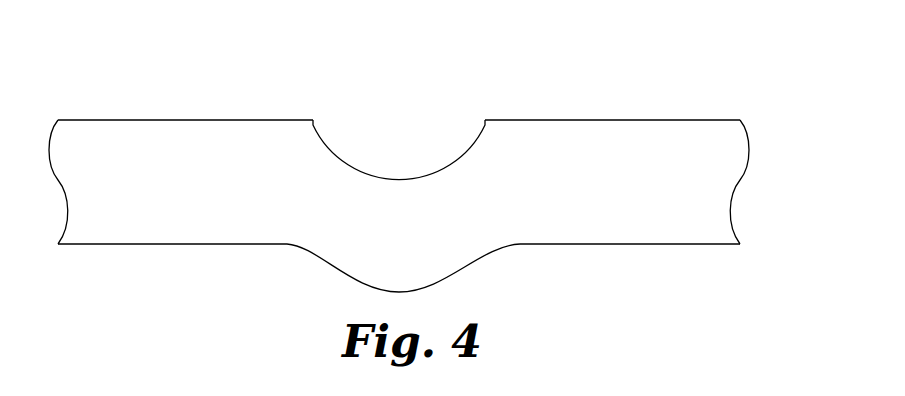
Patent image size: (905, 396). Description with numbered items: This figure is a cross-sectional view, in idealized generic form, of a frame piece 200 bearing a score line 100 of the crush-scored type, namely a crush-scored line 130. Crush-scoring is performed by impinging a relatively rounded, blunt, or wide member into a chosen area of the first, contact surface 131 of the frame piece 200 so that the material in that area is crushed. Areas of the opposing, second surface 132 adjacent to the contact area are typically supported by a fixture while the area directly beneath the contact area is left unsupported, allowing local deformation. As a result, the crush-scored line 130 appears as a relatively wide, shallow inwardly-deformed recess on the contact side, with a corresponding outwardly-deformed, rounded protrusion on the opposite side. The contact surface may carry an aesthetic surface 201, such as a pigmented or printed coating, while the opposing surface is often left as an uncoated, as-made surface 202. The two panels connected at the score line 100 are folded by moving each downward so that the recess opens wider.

The score line 100 is at (395, 105).
The frame piece 200 is at (90, 137).
The crush-scored line 130 is at (442, 90).
The first, contact surface 131 is at (212, 103).
The opposing, second surface 132 is at (155, 263).
The aesthetic surface 201 is at (637, 95).
The as-made, non-aesthetic surface 202 is at (638, 263).